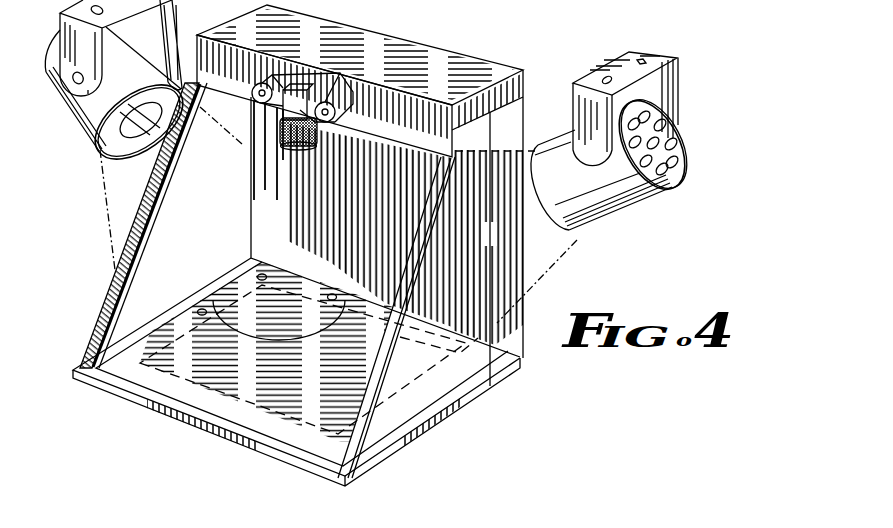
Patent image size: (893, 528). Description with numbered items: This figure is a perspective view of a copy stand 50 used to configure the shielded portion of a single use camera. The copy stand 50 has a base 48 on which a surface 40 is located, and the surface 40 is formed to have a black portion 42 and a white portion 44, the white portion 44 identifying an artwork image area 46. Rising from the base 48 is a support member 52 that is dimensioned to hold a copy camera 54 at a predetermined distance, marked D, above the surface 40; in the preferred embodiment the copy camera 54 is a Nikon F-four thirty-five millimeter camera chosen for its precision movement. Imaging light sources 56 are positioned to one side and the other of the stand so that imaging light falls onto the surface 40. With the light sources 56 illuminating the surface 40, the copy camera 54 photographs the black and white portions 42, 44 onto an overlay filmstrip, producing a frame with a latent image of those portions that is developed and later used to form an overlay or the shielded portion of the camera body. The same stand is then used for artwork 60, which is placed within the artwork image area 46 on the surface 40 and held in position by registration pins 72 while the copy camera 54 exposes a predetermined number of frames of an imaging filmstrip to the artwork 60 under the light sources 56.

The surface 40 is at (420, 417).
The black portion 42 is at (295, 405).
The white portion 44 is at (293, 300).
The artwork image area 46 is at (273, 345).
The base 48 is at (498, 374).
The copy stand 50 is at (516, 43).
The support member 52 is at (437, 62).
The copy camera 54 is at (312, 83).
The imaging light sources 56 is at (74, 140).
The artwork 60 is at (205, 292).
The registration pins 72 is at (242, 275).